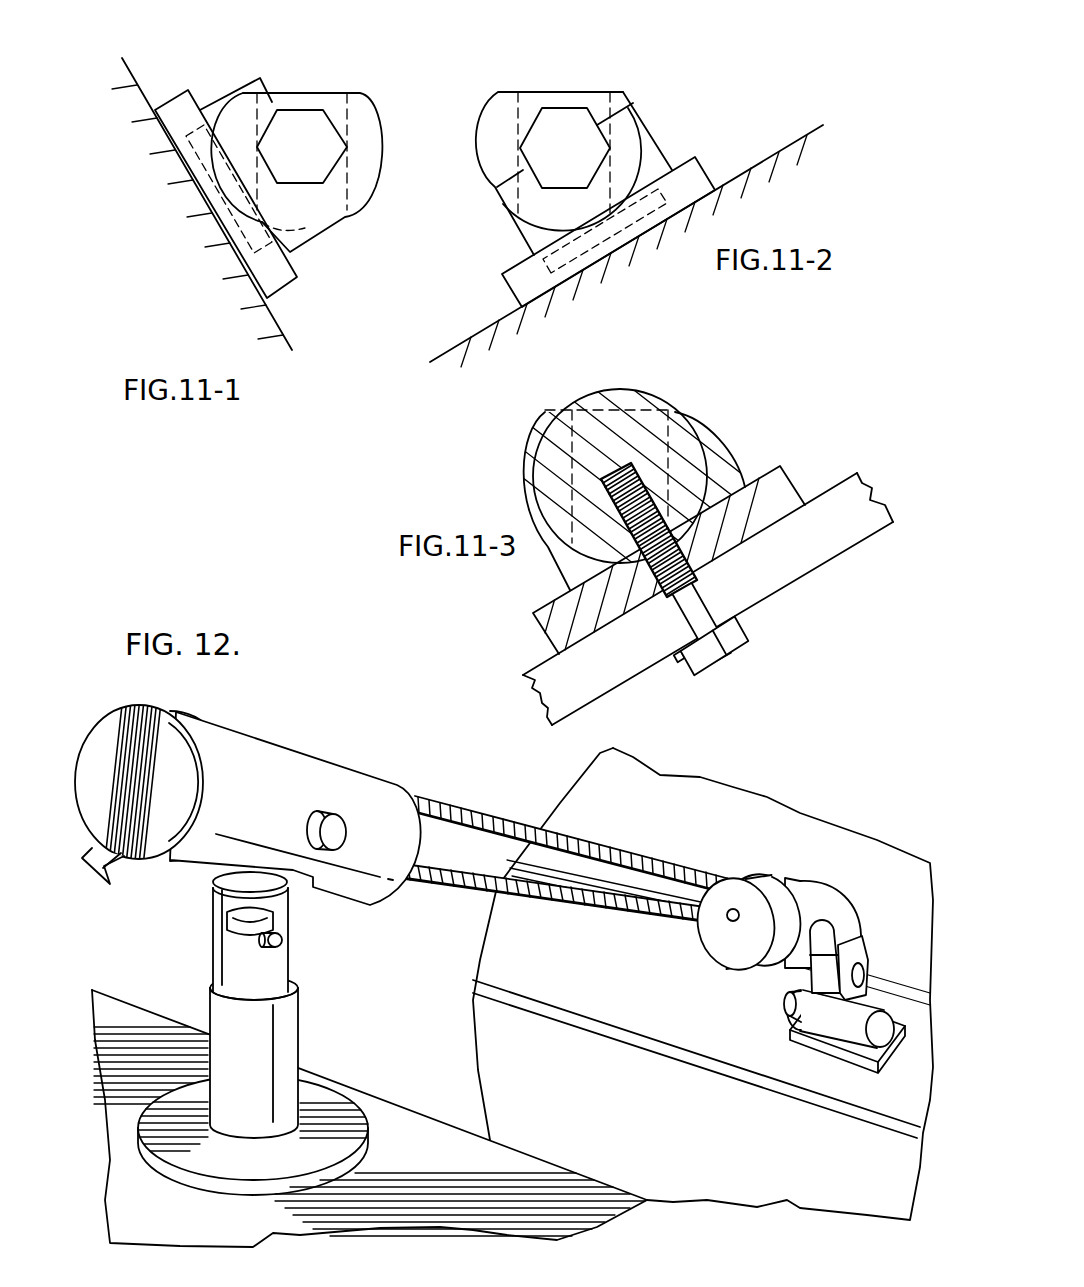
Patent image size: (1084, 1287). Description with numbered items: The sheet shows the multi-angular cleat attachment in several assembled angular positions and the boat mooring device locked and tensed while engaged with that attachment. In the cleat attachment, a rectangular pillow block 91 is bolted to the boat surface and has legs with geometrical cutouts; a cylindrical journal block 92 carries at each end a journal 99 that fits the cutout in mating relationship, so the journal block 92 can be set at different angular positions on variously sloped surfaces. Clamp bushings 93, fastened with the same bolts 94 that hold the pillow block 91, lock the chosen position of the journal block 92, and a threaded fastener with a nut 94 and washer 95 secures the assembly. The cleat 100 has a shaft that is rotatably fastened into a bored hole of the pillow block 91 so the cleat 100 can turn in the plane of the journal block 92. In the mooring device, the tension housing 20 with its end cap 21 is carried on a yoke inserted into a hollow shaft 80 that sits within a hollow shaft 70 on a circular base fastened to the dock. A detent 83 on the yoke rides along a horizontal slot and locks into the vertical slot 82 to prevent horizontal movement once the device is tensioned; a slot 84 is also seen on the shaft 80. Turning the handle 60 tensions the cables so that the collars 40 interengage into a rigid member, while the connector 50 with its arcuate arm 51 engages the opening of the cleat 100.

In FIG. 12, the tension housing 20 is at (248, 781).
In FIG. 12, the end cap 21 is at (115, 712).
In FIG. 12, the collars 40 is at (510, 806).
In FIG. 12, the connector 50 is at (720, 953).
In FIG. 12, the arcuate arm 51 is at (837, 897).
In FIG. 12, the handle 60 is at (110, 870).
In FIG. 12, the hollow shaft 70 is at (300, 1038).
In FIG. 12, the hollow shaft 80 is at (271, 945).
In FIG. 12, the vertical slot 82 is at (292, 958).
In FIG. 12, the detent 83 is at (287, 940).
In FIG. 12, the slot 84 is at (222, 918).
In FIG. 11-1, the pillow block 91 is at (172, 90).
In FIG. 11-2, the pillow block 91 is at (663, 147).
In FIG. 11-3, the pillow block 91 is at (534, 622).
In FIG. 12, the pillow block 91 is at (830, 1053).
In FIG. 11-1, the cylindrical journal block 92 is at (373, 105).
In FIG. 11-3, the cylindrical journal block 92 is at (528, 430).
In FIG. 11-3, the clamp bushings 93 is at (658, 397).
In FIG. 12, the clamp bushings 93 is at (786, 996).
In FIG. 11-3, the bolts 94 is at (750, 645).
In FIG. 11-3, the washer 95 is at (677, 663).
In FIG. 11-1, the journal 99 is at (302, 177).
In FIG. 11-2, the journal 99 is at (568, 120).
In FIG. 12, the cleat 100 is at (795, 1016).